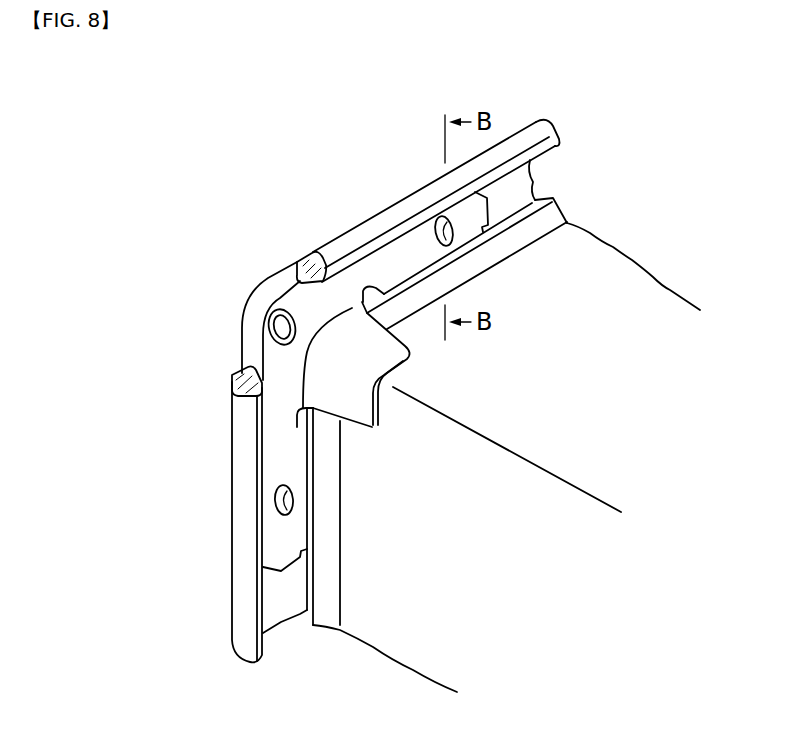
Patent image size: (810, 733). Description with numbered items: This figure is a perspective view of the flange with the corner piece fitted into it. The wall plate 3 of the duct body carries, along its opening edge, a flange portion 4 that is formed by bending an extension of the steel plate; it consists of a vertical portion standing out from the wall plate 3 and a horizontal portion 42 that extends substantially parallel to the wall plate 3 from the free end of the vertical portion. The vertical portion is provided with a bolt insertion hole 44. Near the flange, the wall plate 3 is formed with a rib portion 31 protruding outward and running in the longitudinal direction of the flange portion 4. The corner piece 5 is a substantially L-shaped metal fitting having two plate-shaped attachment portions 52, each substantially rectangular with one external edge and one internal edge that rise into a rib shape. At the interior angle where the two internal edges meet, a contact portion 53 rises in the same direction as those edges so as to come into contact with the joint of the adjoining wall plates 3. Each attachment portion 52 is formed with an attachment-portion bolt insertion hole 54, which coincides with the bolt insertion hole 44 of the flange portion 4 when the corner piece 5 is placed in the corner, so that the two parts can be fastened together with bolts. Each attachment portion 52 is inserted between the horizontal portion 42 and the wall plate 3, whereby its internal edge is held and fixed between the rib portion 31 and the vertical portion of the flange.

The wall plate 3 is at (573, 257).
The rib portion 31 is at (558, 217).
The flange portion 4 is at (378, 190).
The horizontal portion 42 is at (432, 188).
The corner piece 5 is at (350, 282).
The attachment portion 52 is at (468, 207).
The contact portion 53 is at (392, 352).
The attachment-portion bolt insertion hole 54 is at (447, 242).
The bolt insertion hole 44 is at (448, 374).